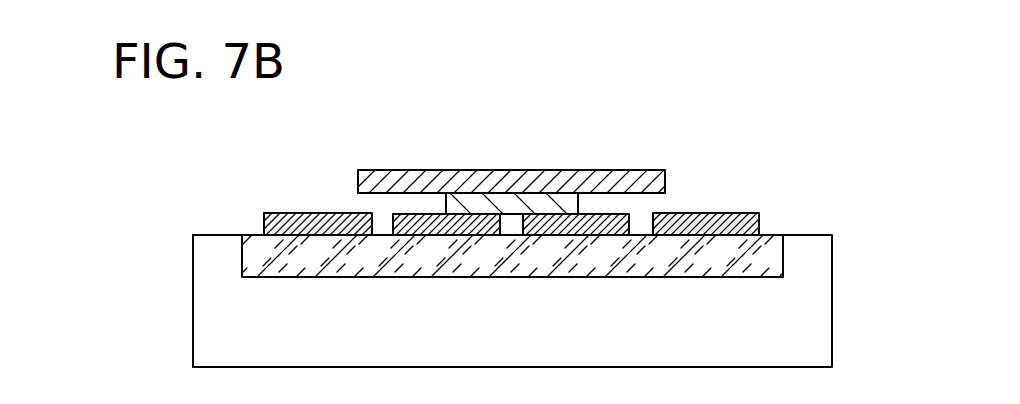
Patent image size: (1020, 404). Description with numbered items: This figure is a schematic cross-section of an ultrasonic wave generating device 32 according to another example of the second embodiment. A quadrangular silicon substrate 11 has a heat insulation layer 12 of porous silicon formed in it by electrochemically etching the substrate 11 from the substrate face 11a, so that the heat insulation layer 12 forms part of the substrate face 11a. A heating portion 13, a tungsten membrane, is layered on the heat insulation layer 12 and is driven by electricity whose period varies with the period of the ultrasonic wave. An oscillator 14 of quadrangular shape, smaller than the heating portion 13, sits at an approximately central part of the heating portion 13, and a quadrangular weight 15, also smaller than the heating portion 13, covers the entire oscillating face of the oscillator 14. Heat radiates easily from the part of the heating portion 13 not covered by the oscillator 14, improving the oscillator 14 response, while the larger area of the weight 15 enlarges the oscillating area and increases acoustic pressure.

The substrate 11 is at (808, 246).
The substrate face 11a is at (211, 234).
The heat insulation layer 12 is at (705, 248).
The heating portion 13 is at (413, 213).
The oscillator 14 is at (492, 202).
The weight 15 is at (602, 180).
The ultrasonic wave generating device 32 is at (769, 164).